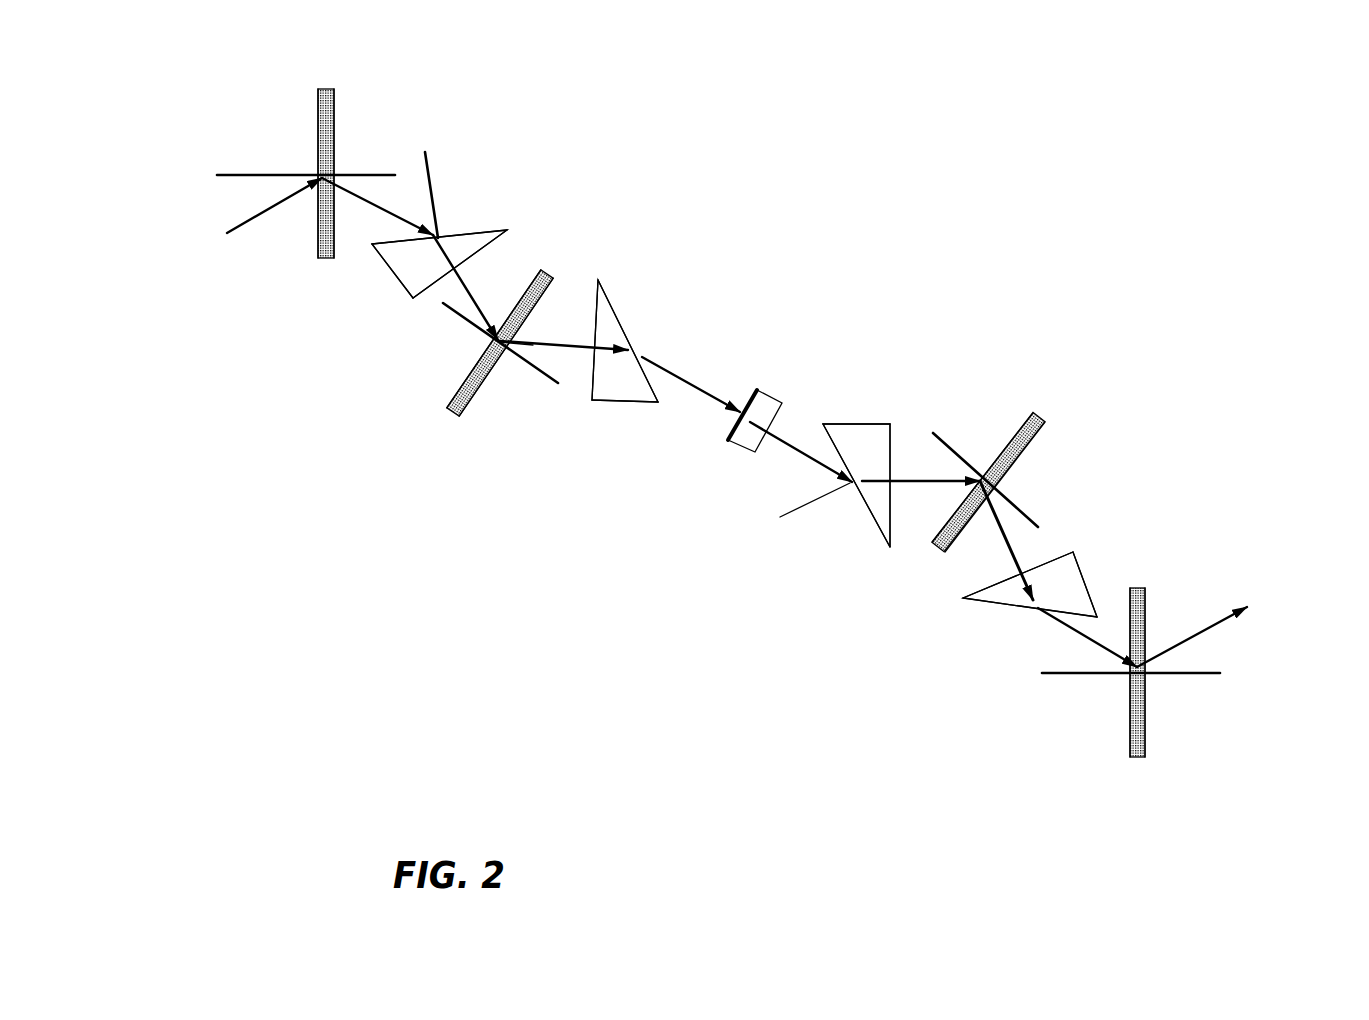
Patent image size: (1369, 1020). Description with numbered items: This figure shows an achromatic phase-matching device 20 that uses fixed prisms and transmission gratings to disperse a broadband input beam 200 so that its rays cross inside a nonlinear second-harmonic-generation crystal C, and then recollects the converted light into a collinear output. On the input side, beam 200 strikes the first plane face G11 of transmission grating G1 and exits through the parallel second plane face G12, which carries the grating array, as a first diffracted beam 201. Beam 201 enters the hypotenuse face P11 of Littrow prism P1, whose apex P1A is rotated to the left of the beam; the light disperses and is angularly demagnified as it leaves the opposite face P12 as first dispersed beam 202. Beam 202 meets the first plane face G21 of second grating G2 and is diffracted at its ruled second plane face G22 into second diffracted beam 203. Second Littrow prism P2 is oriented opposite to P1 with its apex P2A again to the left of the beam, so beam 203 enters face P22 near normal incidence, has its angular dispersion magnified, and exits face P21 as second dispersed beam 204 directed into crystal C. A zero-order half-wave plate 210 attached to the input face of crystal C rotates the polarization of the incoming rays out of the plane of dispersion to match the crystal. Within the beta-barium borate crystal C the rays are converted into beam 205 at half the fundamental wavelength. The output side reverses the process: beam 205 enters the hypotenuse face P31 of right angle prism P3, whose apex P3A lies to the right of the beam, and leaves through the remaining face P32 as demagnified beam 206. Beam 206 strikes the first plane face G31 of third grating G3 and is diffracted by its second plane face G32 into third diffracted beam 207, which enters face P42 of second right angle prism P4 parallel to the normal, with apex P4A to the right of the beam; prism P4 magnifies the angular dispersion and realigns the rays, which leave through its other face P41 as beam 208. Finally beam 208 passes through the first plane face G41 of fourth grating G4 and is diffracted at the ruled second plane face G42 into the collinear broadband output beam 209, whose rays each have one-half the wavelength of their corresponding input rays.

The APM device 20 is at (739, 450).
The broadband input beam 200 is at (263, 207).
The first diffracted beam 201 is at (380, 213).
The first dispersed beam 202 is at (473, 297).
The second diffracted beam 203 is at (577, 353).
The second dispersed beam 204 is at (698, 395).
The converted light beam 205 is at (783, 437).
The demagnified beam 206 is at (925, 485).
The third diffracted beam 207 is at (1015, 550).
The beam 208 is at (1072, 632).
The output beam 209 is at (1207, 637).
The zero-order half-wave plate 210 is at (772, 413).
The nonlinear SHG crystal C is at (740, 453).
The first transmission grating G1 is at (344, 173).
The first plane face of grating G1 G11 is at (312, 233).
The second plane face of grating G1 G12 is at (344, 145).
The second transmission grating G2 is at (465, 373).
The first plane face of grating G2 G21 is at (466, 370).
The second plane face of grating G2 G22 is at (475, 398).
The third transmission grating G3 is at (1035, 437).
The first plane face of grating G3 G31 is at (1025, 418).
The second plane face of grating G3 G32 is at (1022, 452).
The fourth transmission grating G4 is at (1127, 716).
The first plane face of grating G4 G41 is at (1125, 702).
The second plane face of grating G4 G42 is at (1157, 717).
The first Littrow prism P1 is at (469, 256).
The hypotenuse face of prism P1 P11 is at (460, 230).
The opposite face of prism P1 P12 is at (427, 302).
The apex of prism P1 P1A is at (507, 229).
The second Littrow prism P2 is at (661, 348).
The exit face of prism P2 P21 is at (633, 340).
The opposite face of prism P2 P22 is at (583, 385).
The apex of prism P2 P2A is at (597, 275).
The right angle prism P3 is at (833, 466).
The hypotenuse face of prism P3 P31 is at (867, 508).
The second face of prism P3 P32 is at (893, 435).
The apex of prism P3 P3A is at (890, 552).
The second right angle prism P4 is at (971, 629).
The first face of prism P4 P41 is at (1002, 608).
The prism face of prism P4 P42 is at (988, 580).
The apex of prism P4 P4A is at (962, 600).